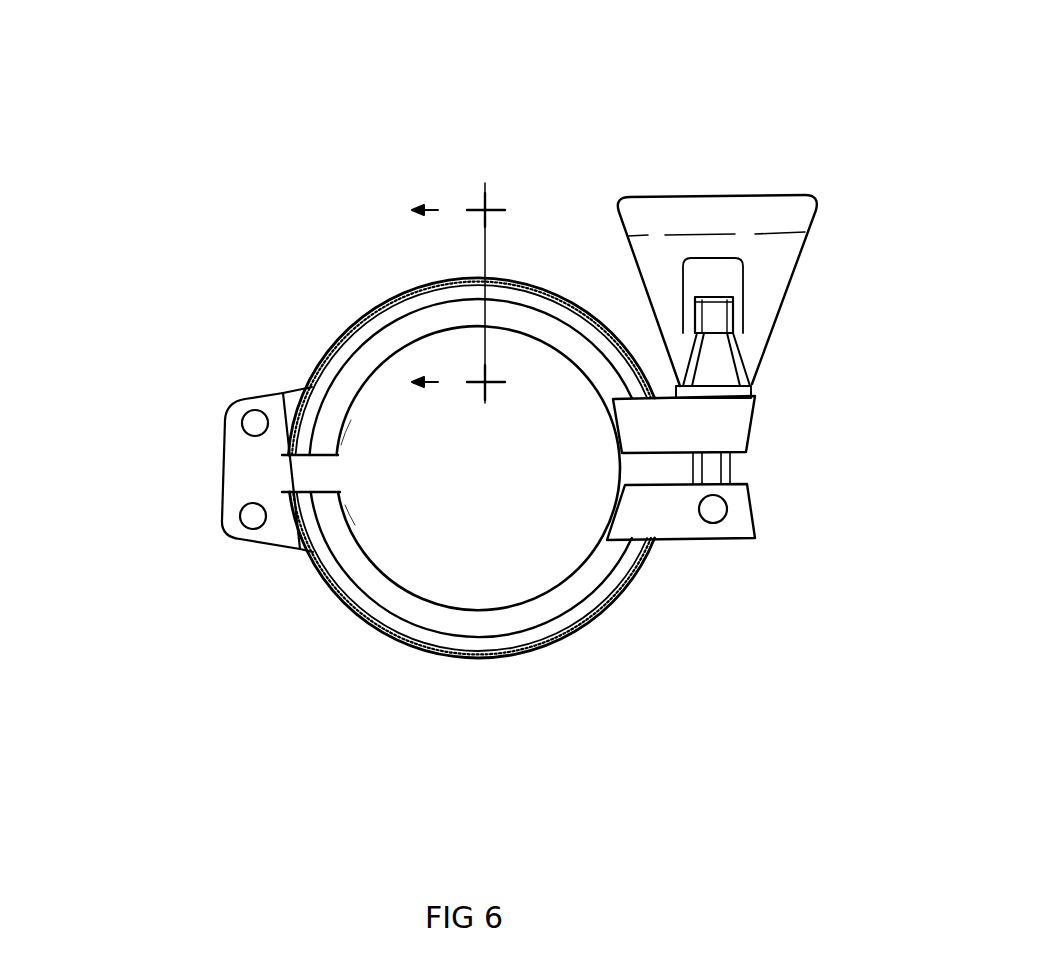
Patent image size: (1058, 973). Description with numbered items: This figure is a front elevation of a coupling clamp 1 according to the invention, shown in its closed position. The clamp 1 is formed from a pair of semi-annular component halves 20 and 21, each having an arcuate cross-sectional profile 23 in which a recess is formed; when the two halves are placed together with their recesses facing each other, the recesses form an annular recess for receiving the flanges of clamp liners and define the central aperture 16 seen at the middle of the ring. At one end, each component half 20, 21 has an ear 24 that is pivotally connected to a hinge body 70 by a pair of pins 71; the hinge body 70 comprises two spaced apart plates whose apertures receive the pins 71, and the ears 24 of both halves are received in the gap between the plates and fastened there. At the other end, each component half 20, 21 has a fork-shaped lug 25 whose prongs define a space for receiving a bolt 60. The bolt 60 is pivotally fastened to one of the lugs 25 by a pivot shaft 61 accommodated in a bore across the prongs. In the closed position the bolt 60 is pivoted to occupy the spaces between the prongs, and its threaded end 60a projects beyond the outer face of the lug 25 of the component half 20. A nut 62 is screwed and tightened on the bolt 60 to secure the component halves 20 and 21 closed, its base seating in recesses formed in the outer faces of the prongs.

The coupling clamp 1 is at (578, 147).
The central aperture 16 is at (500, 507).
The semi-annular component half 20 is at (377, 353).
The semi-annular component half 21 is at (383, 593).
The arcuate cross-sectional profile 23 is at (513, 330).
The ear 24 is at (288, 392).
The fork-shaped lug 25 is at (735, 414).
The bolt 60 is at (711, 471).
The threaded end 60a is at (711, 312).
The pivot shaft 61 is at (716, 510).
The nut 62 is at (787, 200).
The hinge body 70 is at (240, 475).
The pins 71 is at (250, 416).